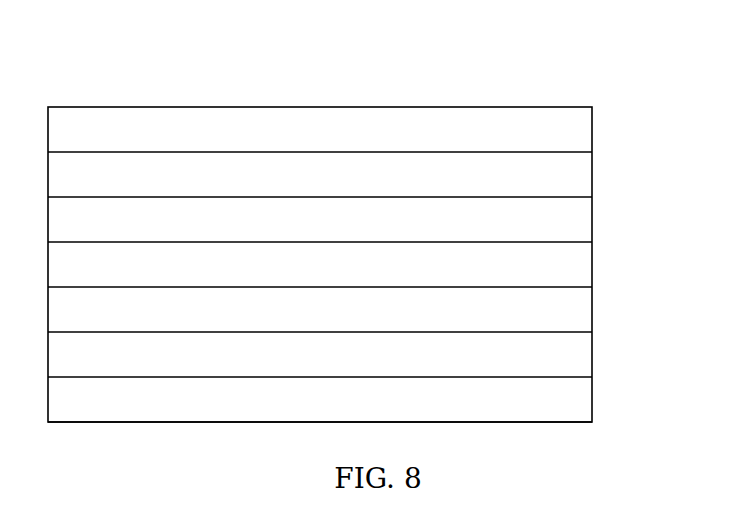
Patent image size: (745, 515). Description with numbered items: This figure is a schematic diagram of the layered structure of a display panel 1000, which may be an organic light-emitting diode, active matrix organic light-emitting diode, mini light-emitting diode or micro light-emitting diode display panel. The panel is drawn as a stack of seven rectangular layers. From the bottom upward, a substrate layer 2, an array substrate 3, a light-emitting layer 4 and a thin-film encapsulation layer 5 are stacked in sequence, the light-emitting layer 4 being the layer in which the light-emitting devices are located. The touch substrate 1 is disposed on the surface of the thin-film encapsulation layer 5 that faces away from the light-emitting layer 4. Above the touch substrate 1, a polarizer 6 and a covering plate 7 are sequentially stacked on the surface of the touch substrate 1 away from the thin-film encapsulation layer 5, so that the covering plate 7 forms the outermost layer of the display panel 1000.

The display panel 1000 is at (485, 70).
The touch substrate 1 is at (592, 220).
The substrate layer 2 is at (592, 400).
The array substrate 3 is at (592, 355).
The light-emitting layer 4 is at (592, 310).
The thin-film encapsulation layer 5 is at (592, 265).
The polarizer 6 is at (592, 176).
The covering plate 7 is at (592, 130).